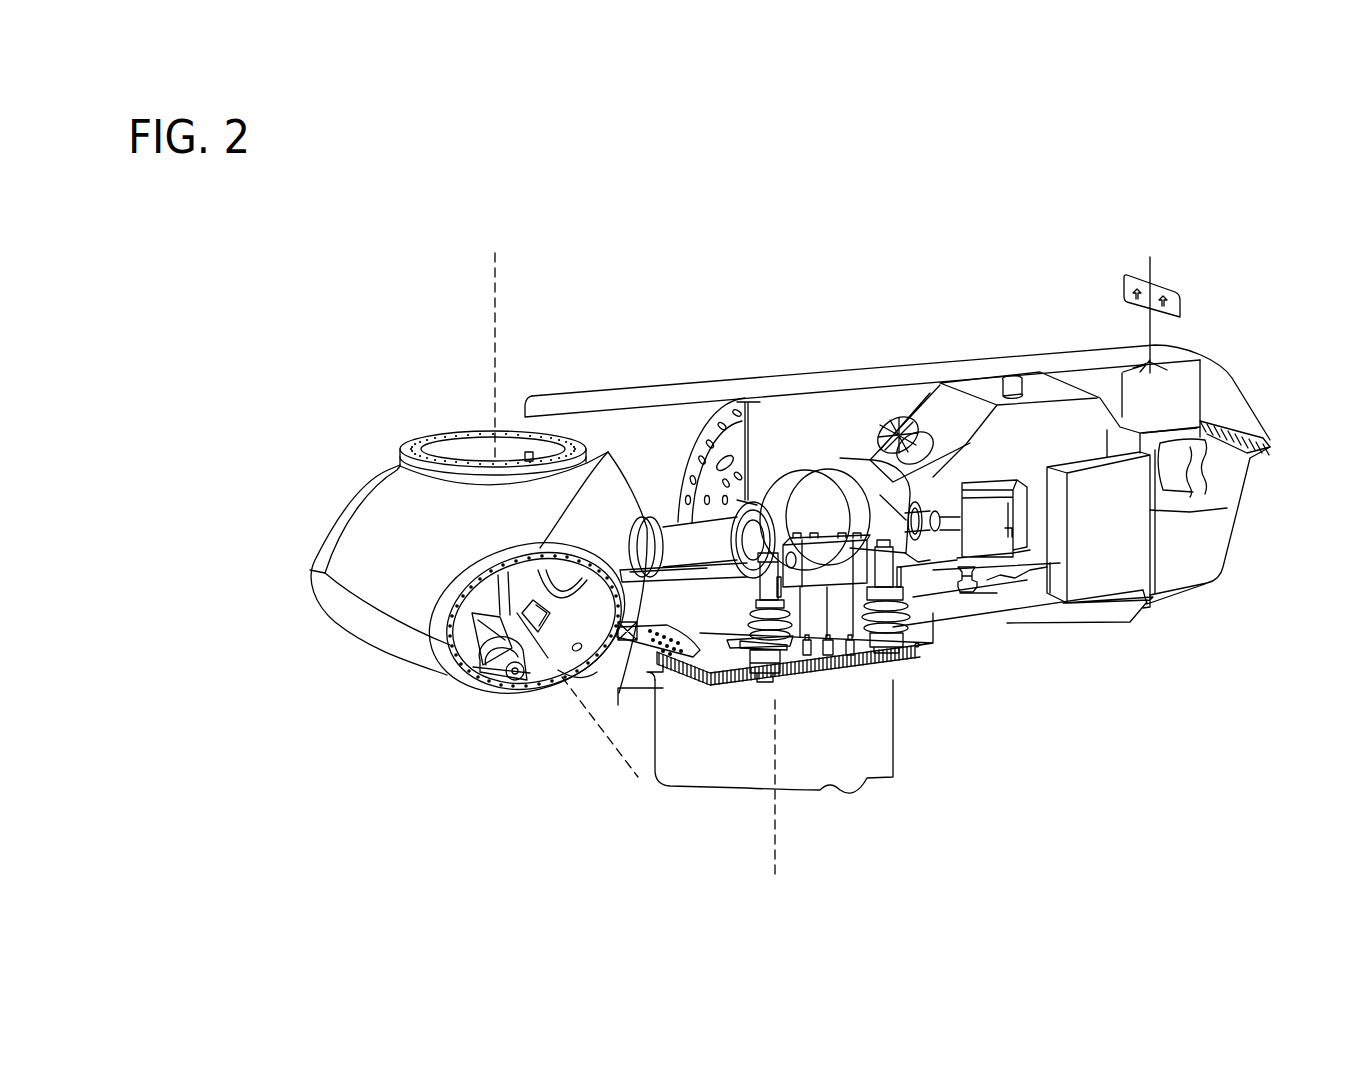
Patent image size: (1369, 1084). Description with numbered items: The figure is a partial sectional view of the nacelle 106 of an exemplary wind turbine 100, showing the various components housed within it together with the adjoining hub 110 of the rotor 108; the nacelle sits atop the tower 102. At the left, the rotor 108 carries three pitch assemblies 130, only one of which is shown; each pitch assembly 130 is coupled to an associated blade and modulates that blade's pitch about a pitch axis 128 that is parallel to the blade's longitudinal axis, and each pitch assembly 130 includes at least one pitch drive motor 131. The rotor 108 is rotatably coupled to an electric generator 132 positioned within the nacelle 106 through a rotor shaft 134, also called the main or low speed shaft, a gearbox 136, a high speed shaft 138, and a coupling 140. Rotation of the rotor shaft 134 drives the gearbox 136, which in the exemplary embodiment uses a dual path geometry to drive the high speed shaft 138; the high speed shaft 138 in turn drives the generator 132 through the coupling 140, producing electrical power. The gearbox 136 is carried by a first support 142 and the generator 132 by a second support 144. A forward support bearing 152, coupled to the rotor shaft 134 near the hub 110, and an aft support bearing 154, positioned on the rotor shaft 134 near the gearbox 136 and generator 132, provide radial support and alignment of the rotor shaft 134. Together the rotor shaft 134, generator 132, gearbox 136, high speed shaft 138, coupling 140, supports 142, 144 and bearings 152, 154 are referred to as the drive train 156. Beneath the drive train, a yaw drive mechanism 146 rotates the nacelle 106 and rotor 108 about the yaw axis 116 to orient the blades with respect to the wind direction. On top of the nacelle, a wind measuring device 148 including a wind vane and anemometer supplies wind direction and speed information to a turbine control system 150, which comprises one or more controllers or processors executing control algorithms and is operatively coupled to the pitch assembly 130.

The wind turbine 100 is at (333, 313).
The tower 102 is at (825, 785).
The nacelle 106 is at (666, 312).
The rotor 108 is at (301, 557).
The hub 110 is at (407, 465).
The yaw axis 116 is at (777, 860).
The pitch axis 128 is at (496, 271).
The pitch assembly 130 is at (464, 567).
The pitch drive motor 131 is at (462, 605).
The electric generator 132 is at (985, 530).
The rotor shaft 134 is at (670, 530).
The gearbox 136 is at (867, 480).
The high speed shaft 138 is at (910, 553).
The coupling 140 is at (940, 483).
The first support 142 is at (865, 647).
The second support 144 is at (943, 573).
The yaw drive mechanism 146 is at (758, 653).
The wind measuring device 148 is at (1177, 293).
The turbine control system 150 is at (1133, 557).
The forward support bearing 152 is at (552, 660).
The aft support bearing 154 is at (823, 490).
The drive train 156 is at (862, 407).